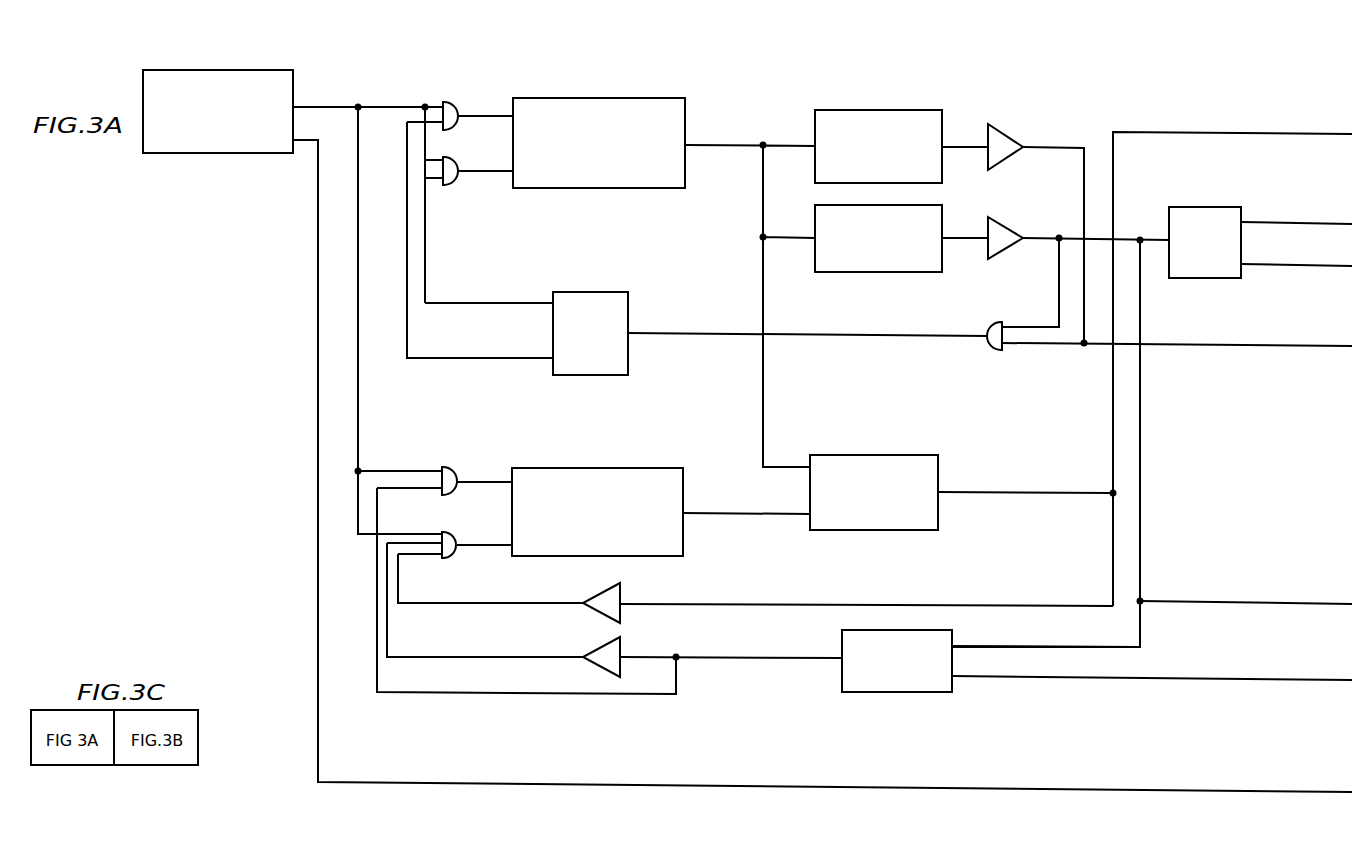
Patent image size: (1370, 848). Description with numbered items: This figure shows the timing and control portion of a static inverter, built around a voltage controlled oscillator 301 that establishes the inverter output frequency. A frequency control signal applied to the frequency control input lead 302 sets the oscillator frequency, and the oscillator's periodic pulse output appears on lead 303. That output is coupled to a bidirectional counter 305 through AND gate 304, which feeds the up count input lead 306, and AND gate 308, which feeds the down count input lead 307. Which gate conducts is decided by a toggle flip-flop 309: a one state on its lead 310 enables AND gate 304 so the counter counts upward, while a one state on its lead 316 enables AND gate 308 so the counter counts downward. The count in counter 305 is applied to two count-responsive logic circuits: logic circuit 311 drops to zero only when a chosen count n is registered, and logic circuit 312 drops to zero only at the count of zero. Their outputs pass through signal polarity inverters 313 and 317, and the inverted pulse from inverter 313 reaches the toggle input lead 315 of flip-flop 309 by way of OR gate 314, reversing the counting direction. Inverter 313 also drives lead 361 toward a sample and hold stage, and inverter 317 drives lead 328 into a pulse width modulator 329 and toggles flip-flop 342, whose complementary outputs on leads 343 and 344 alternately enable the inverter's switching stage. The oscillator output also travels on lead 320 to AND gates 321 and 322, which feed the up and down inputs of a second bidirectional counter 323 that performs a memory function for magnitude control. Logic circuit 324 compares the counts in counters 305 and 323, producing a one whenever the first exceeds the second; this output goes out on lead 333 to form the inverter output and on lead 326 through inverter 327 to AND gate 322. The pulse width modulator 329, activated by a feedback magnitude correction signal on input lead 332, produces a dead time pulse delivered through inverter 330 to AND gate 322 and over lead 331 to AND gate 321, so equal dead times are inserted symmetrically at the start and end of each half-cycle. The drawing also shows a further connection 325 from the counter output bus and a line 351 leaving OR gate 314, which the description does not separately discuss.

The voltage controlled oscillator 301 is at (215, 153).
The frequency control input lead 302 is at (318, 268).
The output lead of the voltage controlled oscillator 303 is at (307, 107).
The AND gate 304 is at (455, 100).
The bidirectional counter circuit 305 is at (620, 98).
The up count input lead 306 is at (488, 115).
The down count input lead 307 is at (489, 168).
The AND gate 308 is at (456, 186).
The toggle flip-flop circuit 309 is at (606, 292).
The output lead of the toggle flip-flop 310 is at (480, 358).
The logic circuit 311 is at (872, 110).
The logic circuit 312 is at (837, 272).
The signal polarity inverter 313 is at (1005, 127).
The OR gate 314 is at (990, 352).
The toggle input lead 315 is at (712, 333).
The output lead of the toggle flip-flop 316 is at (468, 303).
The signal polarity inverter 317 is at (1008, 220).
The lead 320 is at (358, 410).
The AND gate 321 is at (450, 467).
The AND gate 322 is at (456, 559).
The bidirectional counter 323 is at (600, 468).
The logic circuit 324 is at (890, 455).
The counter output line 325 is at (764, 395).
The lead 326 is at (752, 605).
The inverter 327 is at (622, 588).
The lead 328 is at (1140, 531).
The pulse width modulator 329 is at (842, 633).
The signal polarity inverter 330 is at (620, 648).
The lead 331 is at (520, 692).
The input lead 332 is at (1020, 680).
The lead 333 is at (1272, 133).
The flip-flop 342 is at (1200, 207).
The output lead of the flip-flop 343 is at (1292, 222).
The output lead of the flip-flop 344 is at (1288, 266).
The output line 351 is at (1275, 348).
The lead 361 is at (1290, 604).